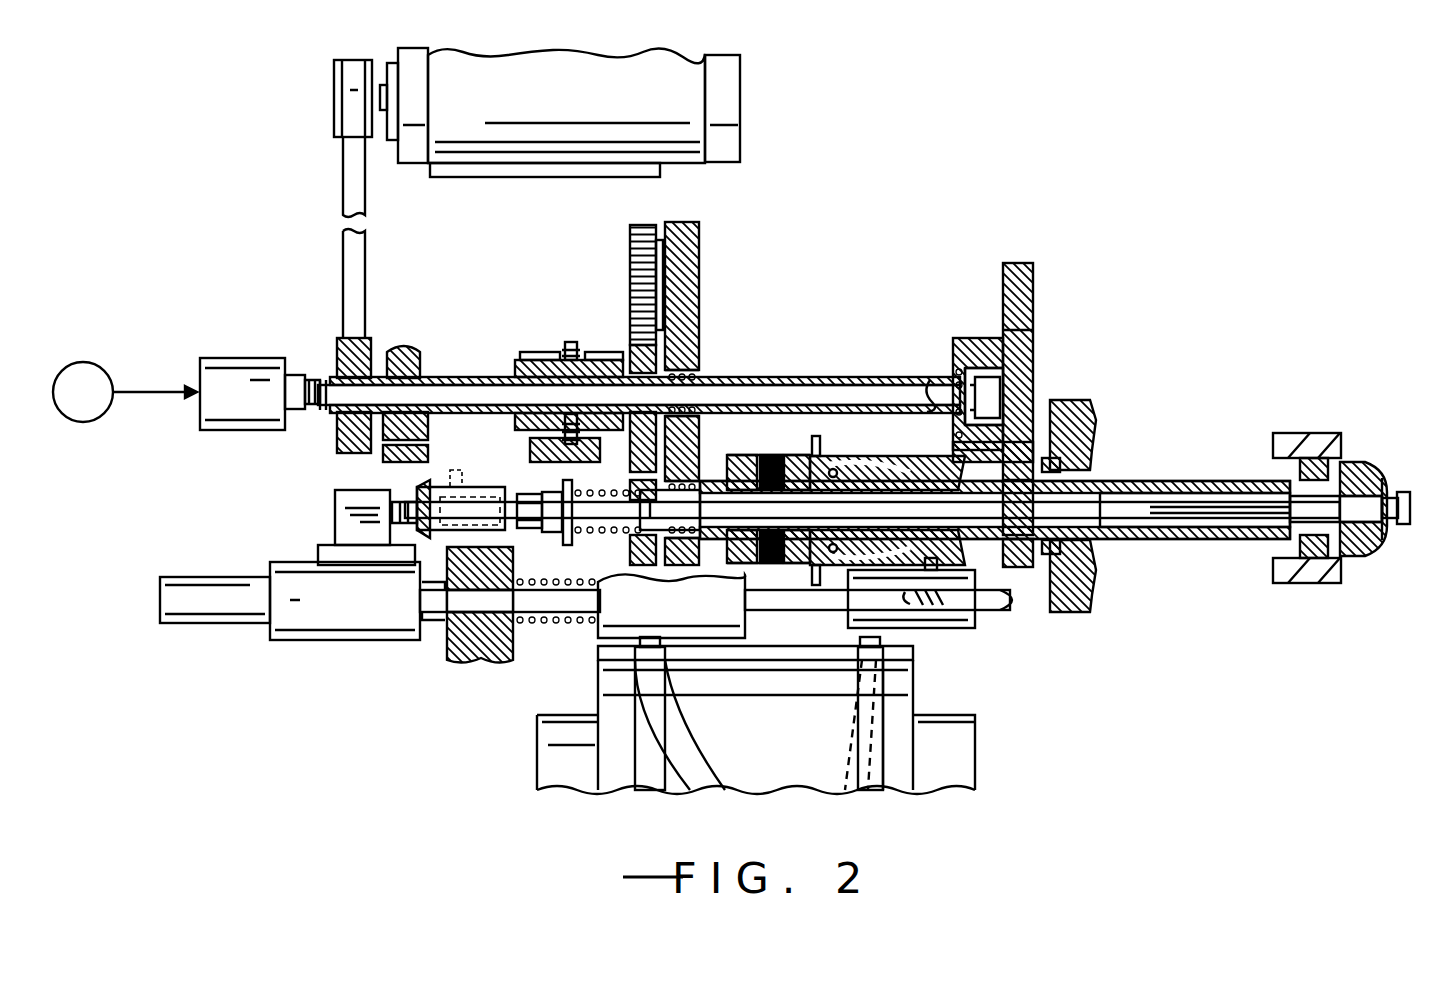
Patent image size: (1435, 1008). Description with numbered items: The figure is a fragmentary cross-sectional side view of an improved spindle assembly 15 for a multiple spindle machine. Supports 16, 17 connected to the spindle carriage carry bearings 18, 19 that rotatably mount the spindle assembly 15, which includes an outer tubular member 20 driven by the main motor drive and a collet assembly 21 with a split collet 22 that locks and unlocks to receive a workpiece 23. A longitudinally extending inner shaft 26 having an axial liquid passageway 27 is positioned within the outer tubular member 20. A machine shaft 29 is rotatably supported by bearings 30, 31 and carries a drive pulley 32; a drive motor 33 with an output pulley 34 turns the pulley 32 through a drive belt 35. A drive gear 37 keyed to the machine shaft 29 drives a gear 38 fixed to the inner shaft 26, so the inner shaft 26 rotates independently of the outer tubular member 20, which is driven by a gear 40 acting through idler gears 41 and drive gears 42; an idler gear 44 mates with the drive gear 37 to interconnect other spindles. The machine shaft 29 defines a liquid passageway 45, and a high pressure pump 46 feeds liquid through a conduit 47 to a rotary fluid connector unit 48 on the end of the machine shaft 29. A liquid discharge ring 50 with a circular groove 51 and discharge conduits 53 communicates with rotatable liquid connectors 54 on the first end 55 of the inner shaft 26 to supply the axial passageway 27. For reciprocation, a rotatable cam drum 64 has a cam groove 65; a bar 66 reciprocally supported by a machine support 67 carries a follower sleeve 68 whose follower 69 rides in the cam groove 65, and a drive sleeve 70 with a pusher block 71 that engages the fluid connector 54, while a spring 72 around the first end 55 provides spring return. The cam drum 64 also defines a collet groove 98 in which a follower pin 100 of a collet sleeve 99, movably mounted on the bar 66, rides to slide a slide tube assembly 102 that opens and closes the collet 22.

The spindle assembly 15 is at (1130, 480).
The support 16 is at (698, 263).
The support 17 is at (1078, 429).
The bearing 18 is at (701, 475).
The bearing 19 is at (1041, 459).
The outer tubular member 20 is at (1192, 532).
The collet assembly 21 is at (1370, 466).
The split collet 22 is at (1383, 567).
The workpiece 23 is at (1405, 535).
The inner shaft 26 is at (1143, 536).
The axial liquid passageway 27 is at (1190, 520).
The machine shaft 29 is at (790, 382).
The bearing 30 is at (699, 371).
The bearing 31 is at (930, 368).
The drive pulley 32 is at (333, 417).
The drive motor 33 is at (592, 106).
The output pulley 34 is at (334, 100).
The drive belt 35 is at (333, 185).
The drive gear 37 is at (608, 361).
The gear 38 is at (577, 451).
The gear 40 is at (1031, 570).
The idler gear 41 is at (1011, 351).
The drive gear 42 is at (1033, 298).
The idler gear 44 is at (640, 225).
The liquid passageway 45 is at (878, 379).
The high pressure pump 46 is at (103, 363).
The conduit 47 is at (160, 400).
The rotary fluid connector unit 48 is at (240, 359).
The liquid discharge ring 50 is at (543, 368).
The circular groove 51 is at (558, 356).
The discharge conduits 53 is at (568, 343).
The rotatable liquid connector 54 is at (456, 487).
The first end 55 is at (570, 532).
The cam drum 64 is at (615, 697).
The cam groove 65 is at (671, 762).
The bar 66 is at (438, 613).
The machine support 67 is at (483, 660).
The follower sleeve 68 is at (746, 627).
The follower 69 is at (666, 650).
The drive sleeve 70 is at (340, 635).
The pusher block 71 is at (335, 508).
The spring 72 is at (572, 488).
The collet groove 98 is at (890, 715).
The collet sleeve 99 is at (963, 630).
The follower pin 100 is at (845, 653).
The slide tube assembly 102 is at (814, 455).